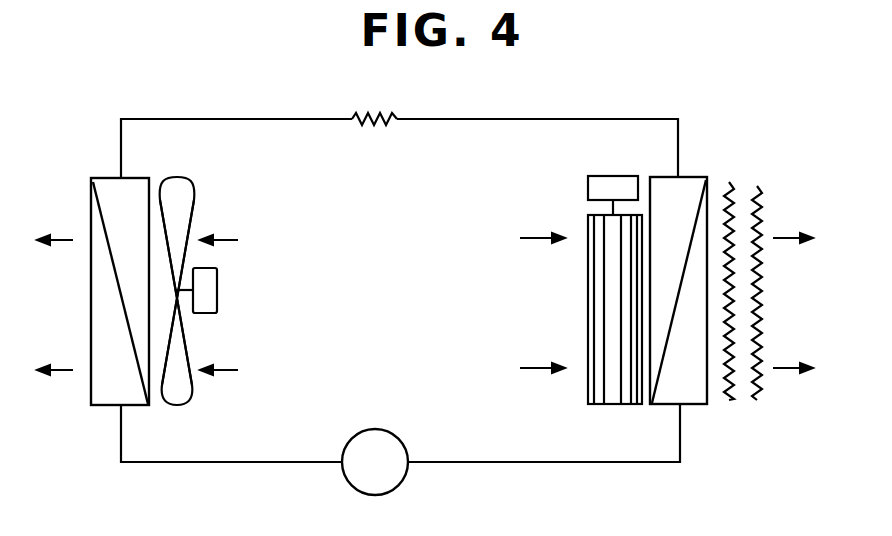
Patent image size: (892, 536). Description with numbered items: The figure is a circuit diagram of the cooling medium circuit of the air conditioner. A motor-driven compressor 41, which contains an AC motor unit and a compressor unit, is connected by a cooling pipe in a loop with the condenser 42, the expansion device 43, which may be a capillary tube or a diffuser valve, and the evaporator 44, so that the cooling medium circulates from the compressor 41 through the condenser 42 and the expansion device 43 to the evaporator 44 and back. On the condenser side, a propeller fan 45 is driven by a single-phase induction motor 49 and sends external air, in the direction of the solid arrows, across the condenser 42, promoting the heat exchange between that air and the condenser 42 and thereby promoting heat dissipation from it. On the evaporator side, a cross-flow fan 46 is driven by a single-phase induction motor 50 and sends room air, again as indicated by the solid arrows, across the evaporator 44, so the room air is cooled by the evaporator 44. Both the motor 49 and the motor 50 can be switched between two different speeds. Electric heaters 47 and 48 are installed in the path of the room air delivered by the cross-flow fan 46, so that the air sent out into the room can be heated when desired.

The motor-driven compressor 41 is at (397, 487).
The condenser 42 is at (91, 393).
The expansion device 43 is at (373, 125).
The evaporator 44 is at (697, 405).
The propeller fan 45 is at (186, 345).
The cross-flow fan 46 is at (588, 305).
The electric heater 47 is at (729, 182).
The electric heater 48 is at (757, 186).
The single-phase induction motor 49 is at (217, 290).
The single-phase induction motor 50 is at (588, 190).